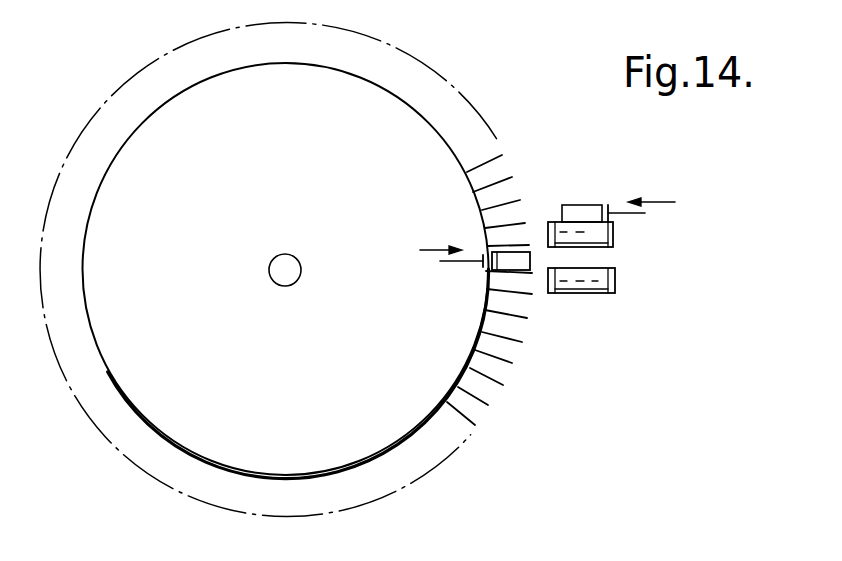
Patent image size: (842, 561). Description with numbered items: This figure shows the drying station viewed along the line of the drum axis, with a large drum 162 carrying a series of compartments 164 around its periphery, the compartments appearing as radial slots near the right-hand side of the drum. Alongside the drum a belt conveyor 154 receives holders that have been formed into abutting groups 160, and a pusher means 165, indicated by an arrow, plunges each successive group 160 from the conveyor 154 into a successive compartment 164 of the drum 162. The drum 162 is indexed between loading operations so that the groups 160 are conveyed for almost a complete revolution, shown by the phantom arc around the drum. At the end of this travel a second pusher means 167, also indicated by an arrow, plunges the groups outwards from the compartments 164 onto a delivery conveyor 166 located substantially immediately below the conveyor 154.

The drum 162 is at (322, 181).
The compartments 164 is at (505, 190).
The abutting groups 160 is at (512, 254).
The pusher means 167 is at (460, 262).
The pusher means 165 is at (634, 215).
The belt conveyor 154 is at (613, 234).
The delivery conveyor 166 is at (597, 268).